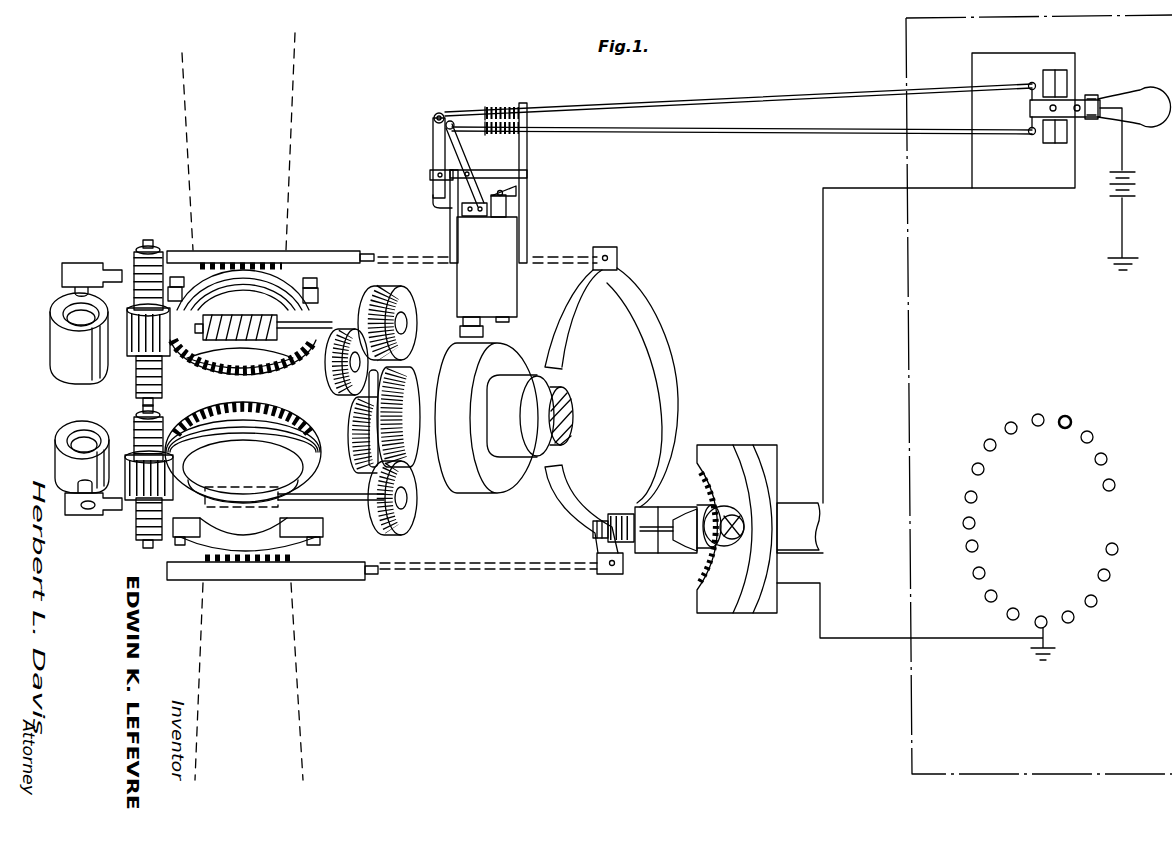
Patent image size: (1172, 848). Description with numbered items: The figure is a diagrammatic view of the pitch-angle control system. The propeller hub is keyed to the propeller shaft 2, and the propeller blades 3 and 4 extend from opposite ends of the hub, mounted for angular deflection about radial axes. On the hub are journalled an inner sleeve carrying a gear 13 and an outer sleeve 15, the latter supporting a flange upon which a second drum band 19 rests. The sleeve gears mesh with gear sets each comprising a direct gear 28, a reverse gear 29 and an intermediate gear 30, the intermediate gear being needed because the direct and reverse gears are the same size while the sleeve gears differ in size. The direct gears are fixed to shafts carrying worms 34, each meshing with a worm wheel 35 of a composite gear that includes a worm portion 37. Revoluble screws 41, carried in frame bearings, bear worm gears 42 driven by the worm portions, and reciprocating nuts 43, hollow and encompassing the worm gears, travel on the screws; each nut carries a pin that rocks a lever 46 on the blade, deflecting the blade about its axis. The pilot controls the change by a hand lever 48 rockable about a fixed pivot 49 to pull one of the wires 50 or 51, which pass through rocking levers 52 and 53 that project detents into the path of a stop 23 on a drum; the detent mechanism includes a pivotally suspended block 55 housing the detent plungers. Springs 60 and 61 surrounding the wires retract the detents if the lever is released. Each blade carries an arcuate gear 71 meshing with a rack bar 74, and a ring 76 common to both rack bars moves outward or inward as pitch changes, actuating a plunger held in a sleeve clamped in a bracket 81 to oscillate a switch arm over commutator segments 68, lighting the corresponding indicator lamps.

The propeller shaft 2 is at (574, 402).
The propeller blade 3 is at (290, 166).
The propeller blade 4 is at (295, 644).
The gear 13 is at (353, 462).
The outer sleeve 15 is at (395, 430).
The second drum band 19 is at (456, 492).
The stop 23 is at (462, 330).
The direct gear 28 is at (400, 297).
The reverse gear 29 is at (307, 318).
The intermediate gear 30 is at (346, 362).
The worm 34 is at (225, 338).
The worm wheel 35 is at (318, 412).
The worm portion 37 is at (320, 313).
The revoluble screw 41 is at (143, 250).
The worm gear 42 is at (131, 406).
The reciprocating nut 43 is at (52, 347).
The lever 46 is at (88, 266).
The hand lever 48 is at (1135, 95).
The fixed pivot 49 is at (1048, 109).
The wire 50 is at (632, 110).
The wire 51 is at (664, 130).
The rocking lever 52 is at (433, 150).
The rocking lever 53 is at (460, 153).
The block 55 is at (562, 305).
The spring 60 is at (513, 140).
The spring 61 is at (511, 110).
The commutator segment 68 is at (708, 492).
The arcuate gear 71 is at (282, 276).
The rack bar 74 is at (245, 253).
The ring 76 is at (645, 302).
The bracket 81 is at (685, 553).